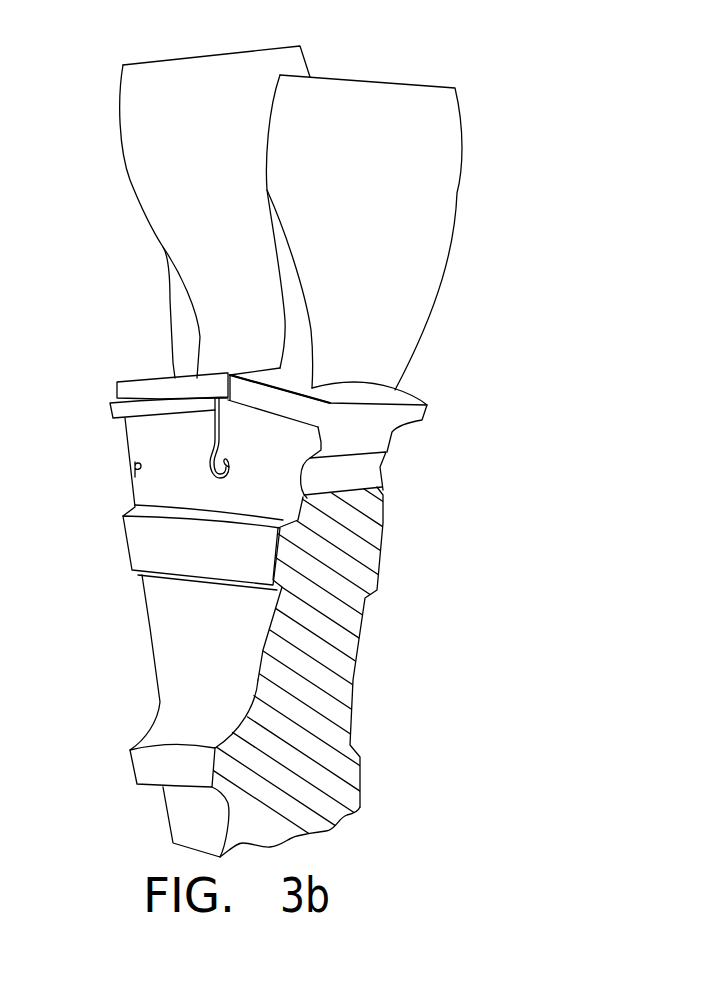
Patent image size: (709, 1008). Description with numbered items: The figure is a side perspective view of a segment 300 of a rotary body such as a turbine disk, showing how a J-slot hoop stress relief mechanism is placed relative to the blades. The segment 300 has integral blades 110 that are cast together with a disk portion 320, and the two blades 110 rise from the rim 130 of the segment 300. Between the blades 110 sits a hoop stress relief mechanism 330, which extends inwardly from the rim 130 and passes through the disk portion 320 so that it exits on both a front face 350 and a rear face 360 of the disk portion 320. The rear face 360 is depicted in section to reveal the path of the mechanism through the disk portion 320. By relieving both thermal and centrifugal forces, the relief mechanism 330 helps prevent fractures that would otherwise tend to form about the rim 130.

The segment 300 is at (572, 178).
The blades 110 is at (190, 83).
The rim 130 is at (171, 372).
The hoop stress relief mechanism 330 is at (193, 460).
The front face 350 is at (232, 556).
The disk portion 320 is at (157, 667).
The rear face 360 is at (347, 632).